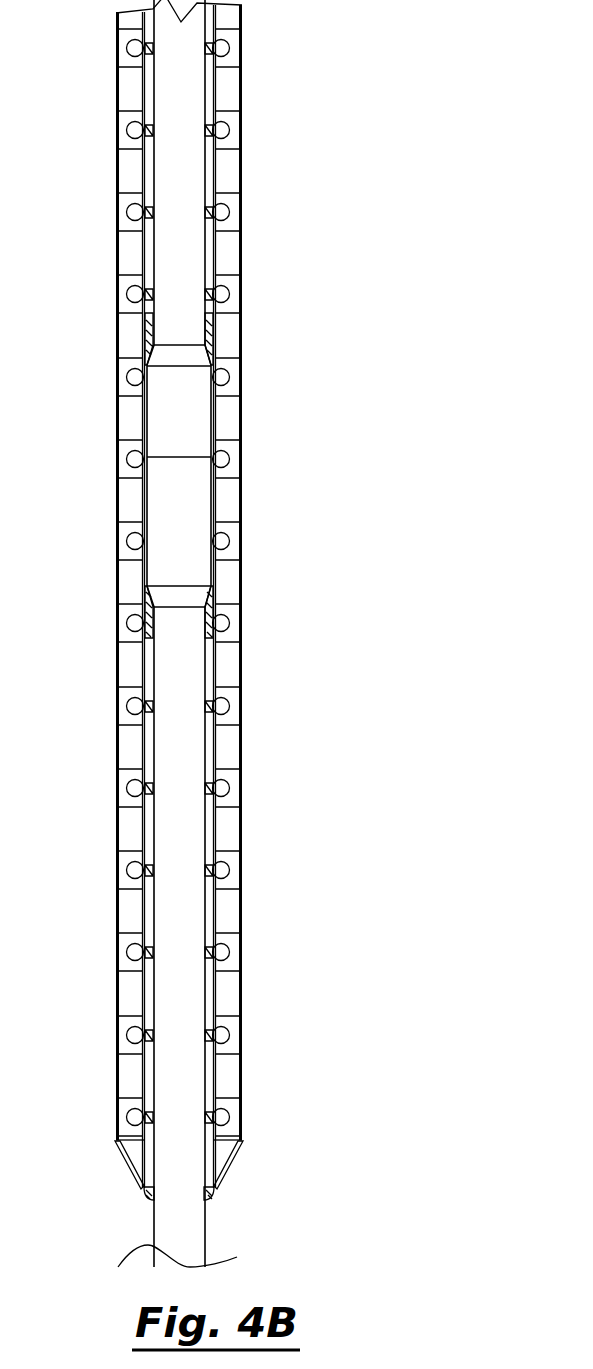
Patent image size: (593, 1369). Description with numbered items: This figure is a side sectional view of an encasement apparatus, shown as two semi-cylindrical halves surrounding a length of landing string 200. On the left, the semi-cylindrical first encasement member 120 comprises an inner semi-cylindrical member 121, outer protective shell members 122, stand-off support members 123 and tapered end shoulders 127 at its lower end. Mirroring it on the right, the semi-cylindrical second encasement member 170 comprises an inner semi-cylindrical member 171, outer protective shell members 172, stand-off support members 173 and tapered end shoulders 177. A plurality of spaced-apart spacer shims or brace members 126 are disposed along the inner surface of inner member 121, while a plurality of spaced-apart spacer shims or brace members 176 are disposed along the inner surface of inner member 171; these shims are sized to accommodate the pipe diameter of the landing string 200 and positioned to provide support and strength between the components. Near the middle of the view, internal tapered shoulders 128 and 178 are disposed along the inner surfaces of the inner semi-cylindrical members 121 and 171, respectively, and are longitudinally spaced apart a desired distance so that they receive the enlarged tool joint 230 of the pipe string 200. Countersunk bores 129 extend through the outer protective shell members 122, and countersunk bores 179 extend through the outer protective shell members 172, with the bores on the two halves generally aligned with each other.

The first encasement member 120 is at (83, 607).
The inner semi-cylindrical member 121 is at (140, 913).
The outer protective shell members 122 is at (110, 244).
The stand-off support members 123 is at (133, 832).
The spacer shims or brace members 126 is at (137, 65).
The tapered end shoulders 127 is at (127, 1167).
The internal tapered shoulders 128 is at (147, 333).
The countersunk bores 129 is at (137, 128).
The second encasement member 170 is at (274, 600).
The inner semi-cylindrical member 171 is at (217, 913).
The outer protective shell members 172 is at (256, 172).
The stand-off support members 173 is at (230, 253).
The spacer shims or brace members 176 is at (210, 42).
The tapered end shoulders 177 is at (232, 1162).
The internal tapered shoulders 178 is at (214, 329).
The countersunk bores 179 is at (228, 125).
The landing string 200 is at (224, 633).
The tool joint 230 is at (192, 455).